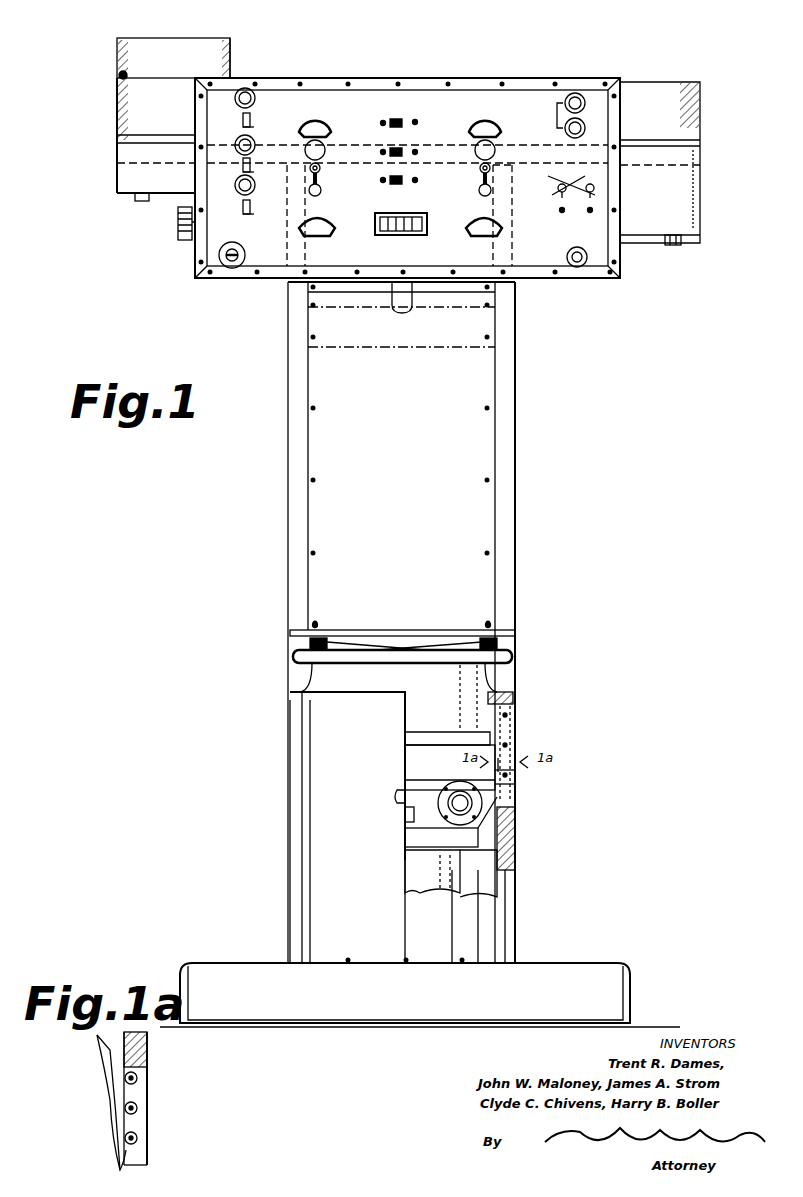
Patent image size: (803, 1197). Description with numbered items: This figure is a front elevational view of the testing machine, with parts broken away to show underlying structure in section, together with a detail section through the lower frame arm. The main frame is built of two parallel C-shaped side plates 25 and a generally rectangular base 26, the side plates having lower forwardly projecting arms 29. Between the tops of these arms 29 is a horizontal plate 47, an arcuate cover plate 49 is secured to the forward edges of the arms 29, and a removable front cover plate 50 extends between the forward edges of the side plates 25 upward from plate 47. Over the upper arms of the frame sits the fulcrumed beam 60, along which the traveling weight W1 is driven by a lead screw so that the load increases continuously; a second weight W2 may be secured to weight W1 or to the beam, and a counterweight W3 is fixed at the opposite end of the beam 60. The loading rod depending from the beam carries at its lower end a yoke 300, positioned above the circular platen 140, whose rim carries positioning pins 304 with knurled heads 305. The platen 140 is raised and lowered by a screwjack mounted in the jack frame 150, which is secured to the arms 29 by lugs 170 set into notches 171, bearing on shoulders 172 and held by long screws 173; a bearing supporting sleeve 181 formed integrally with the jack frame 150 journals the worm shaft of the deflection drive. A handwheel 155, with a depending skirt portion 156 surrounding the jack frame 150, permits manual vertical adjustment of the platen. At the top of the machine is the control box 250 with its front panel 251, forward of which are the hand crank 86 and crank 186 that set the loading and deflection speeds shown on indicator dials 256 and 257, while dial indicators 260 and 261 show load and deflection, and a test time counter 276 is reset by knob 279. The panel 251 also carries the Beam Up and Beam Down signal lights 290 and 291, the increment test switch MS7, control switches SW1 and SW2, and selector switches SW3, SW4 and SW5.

In FIG. 1, the traveling weight W1 is at (170, 46).
In FIG. 1, the second weight W2 is at (117, 182).
In FIG. 1, the counterweight W3 is at (702, 230).
In FIG. 1, the fulcrumed beam 60 is at (680, 84).
In FIG. 1, the control box 250 is at (195, 250).
In FIG. 1, the front panel 251 is at (218, 280).
In FIG. 1, the reset knob 279 is at (178, 224).
In FIG. 1, the indicator dial 256 is at (334, 118).
In FIG. 1, the indicator dial 257 is at (467, 126).
In FIG. 1, the hand crank 86 is at (322, 180).
In FIG. 1, the crank 186 is at (492, 178).
In FIG. 1, the selector switch SW3 is at (392, 124).
In FIG. 1, the selector switch SW4 is at (390, 153).
In FIG. 1, the selector switch SW5 is at (390, 182).
In FIG. 1, the test time counter 276 is at (380, 236).
In FIG. 1, the dial indicator 260 is at (300, 226).
In FIG. 1, the dial indicator 261 is at (470, 234).
In FIG. 1, the Beam Up signal light 290 is at (574, 92).
In FIG. 1, the Beam Down signal light 291 is at (588, 132).
In FIG. 1, the control switch SW1 is at (558, 192).
In FIG. 1, the control switch SW2 is at (594, 190).
In FIG. 1, the increment test switch MS7 is at (583, 272).
In FIG. 1, the front cover plate 50 is at (500, 434).
In FIG. 1, the side plates 25 is at (289, 533).
In FIG. 1, the yoke 300 is at (404, 312).
In FIG. 1, the circular platen 140 is at (290, 628).
In FIG. 1, the positioning pins 304 is at (318, 624).
In FIG. 1, the knurled heads 305 is at (310, 642).
In FIG. 1, the handwheel 155 is at (295, 656).
In FIG. 1, the horizontal plate 47 is at (500, 694).
In FIG. 1, the long screws 173 is at (505, 720).
In FIG. 1A, the long screws 173 is at (140, 1105).
In FIG. 1, the skirt portion 156 is at (405, 712).
In FIG. 1, the jack frame 150 is at (417, 763).
In FIG. 1, the lugs 170 is at (516, 772).
In FIG. 1, the notches 171 is at (516, 786).
In FIG. 1, the bearing supporting sleeve 181 is at (455, 815).
In FIG. 1, the shoulders 172 is at (487, 836).
In FIG. 1, the lower forwardly projecting arms 29 is at (516, 832).
In FIG. 1A, the lower forwardly projecting arms 29 is at (149, 1052).
In FIG. 1, the arcuate cover plate 49 is at (302, 883).
In FIG. 1, the base 26 is at (634, 974).